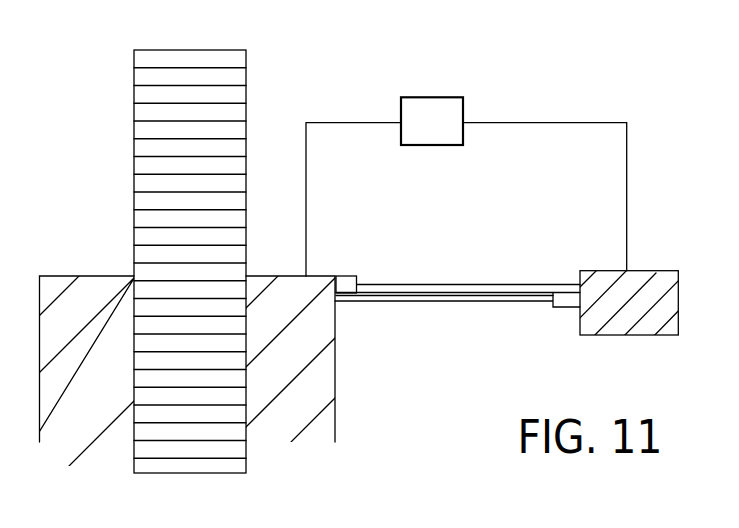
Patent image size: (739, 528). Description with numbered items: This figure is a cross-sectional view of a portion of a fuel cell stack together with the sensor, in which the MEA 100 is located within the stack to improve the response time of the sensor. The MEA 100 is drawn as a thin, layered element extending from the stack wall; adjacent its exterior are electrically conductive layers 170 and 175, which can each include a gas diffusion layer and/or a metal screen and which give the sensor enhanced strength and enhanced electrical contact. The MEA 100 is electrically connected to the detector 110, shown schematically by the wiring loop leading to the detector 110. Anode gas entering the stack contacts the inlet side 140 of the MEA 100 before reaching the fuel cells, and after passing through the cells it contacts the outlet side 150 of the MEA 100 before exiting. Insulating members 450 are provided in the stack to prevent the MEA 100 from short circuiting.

The detector 110 is at (447, 132).
The insulating members 450 is at (353, 276).
The MEA 100 is at (403, 282).
The electrically conductive layer 170 is at (457, 282).
The electrically conductive layer 175 is at (510, 314).
The inlet side 140 is at (527, 268).
The outlet side 150 is at (457, 310).